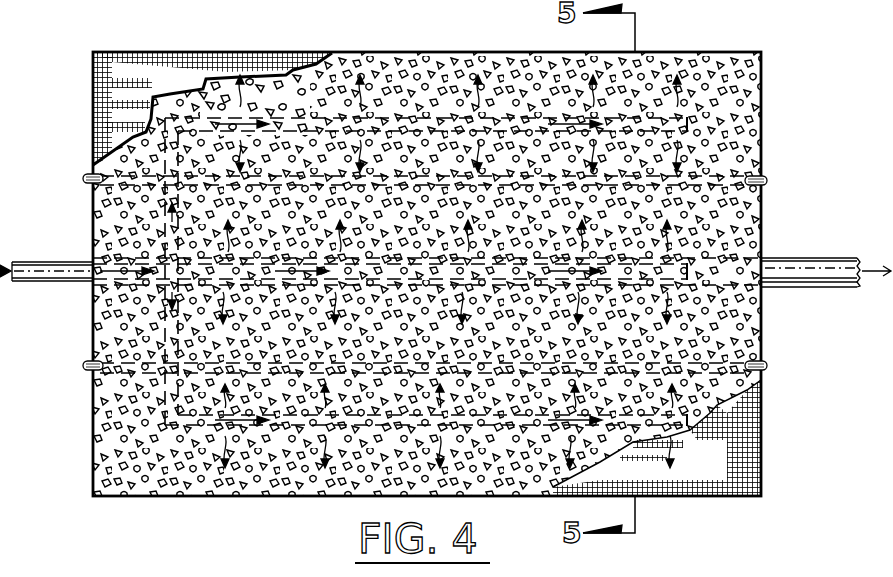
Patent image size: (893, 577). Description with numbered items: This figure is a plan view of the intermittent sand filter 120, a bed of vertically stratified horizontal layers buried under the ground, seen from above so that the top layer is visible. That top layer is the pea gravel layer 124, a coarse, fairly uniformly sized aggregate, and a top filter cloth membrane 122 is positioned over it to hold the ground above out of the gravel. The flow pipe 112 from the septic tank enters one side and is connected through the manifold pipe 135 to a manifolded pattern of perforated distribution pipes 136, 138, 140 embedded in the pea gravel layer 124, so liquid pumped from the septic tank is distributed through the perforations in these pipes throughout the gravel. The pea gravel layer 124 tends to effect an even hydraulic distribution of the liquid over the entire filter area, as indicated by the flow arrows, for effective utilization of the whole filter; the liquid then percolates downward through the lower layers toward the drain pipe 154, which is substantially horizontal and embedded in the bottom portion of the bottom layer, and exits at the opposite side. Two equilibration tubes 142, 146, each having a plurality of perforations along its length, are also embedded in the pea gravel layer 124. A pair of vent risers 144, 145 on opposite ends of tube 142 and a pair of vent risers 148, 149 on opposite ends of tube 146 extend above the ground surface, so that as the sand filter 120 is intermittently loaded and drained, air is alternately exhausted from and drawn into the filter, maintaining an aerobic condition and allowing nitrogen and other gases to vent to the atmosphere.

The flow pipe 112 is at (63, 262).
The intermittent sand filter 120 is at (405, 47).
The top filter cloth membrane 122 is at (93, 165).
The pea gravel layer 124 is at (715, 73).
The manifold pipe 135 is at (165, 309).
The perforated distribution pipe 136 is at (490, 257).
The perforated distribution pipe 138 is at (600, 116).
The perforated distribution pipe 140 is at (480, 427).
The equilibration tube 142 is at (602, 174).
The vent riser 144 is at (84, 181).
The vent riser 145 is at (766, 180).
The equilibration tube 146 is at (580, 376).
The vent riser 148 is at (85, 371).
The vent riser 149 is at (768, 365).
The drain pipe 154 is at (780, 258).